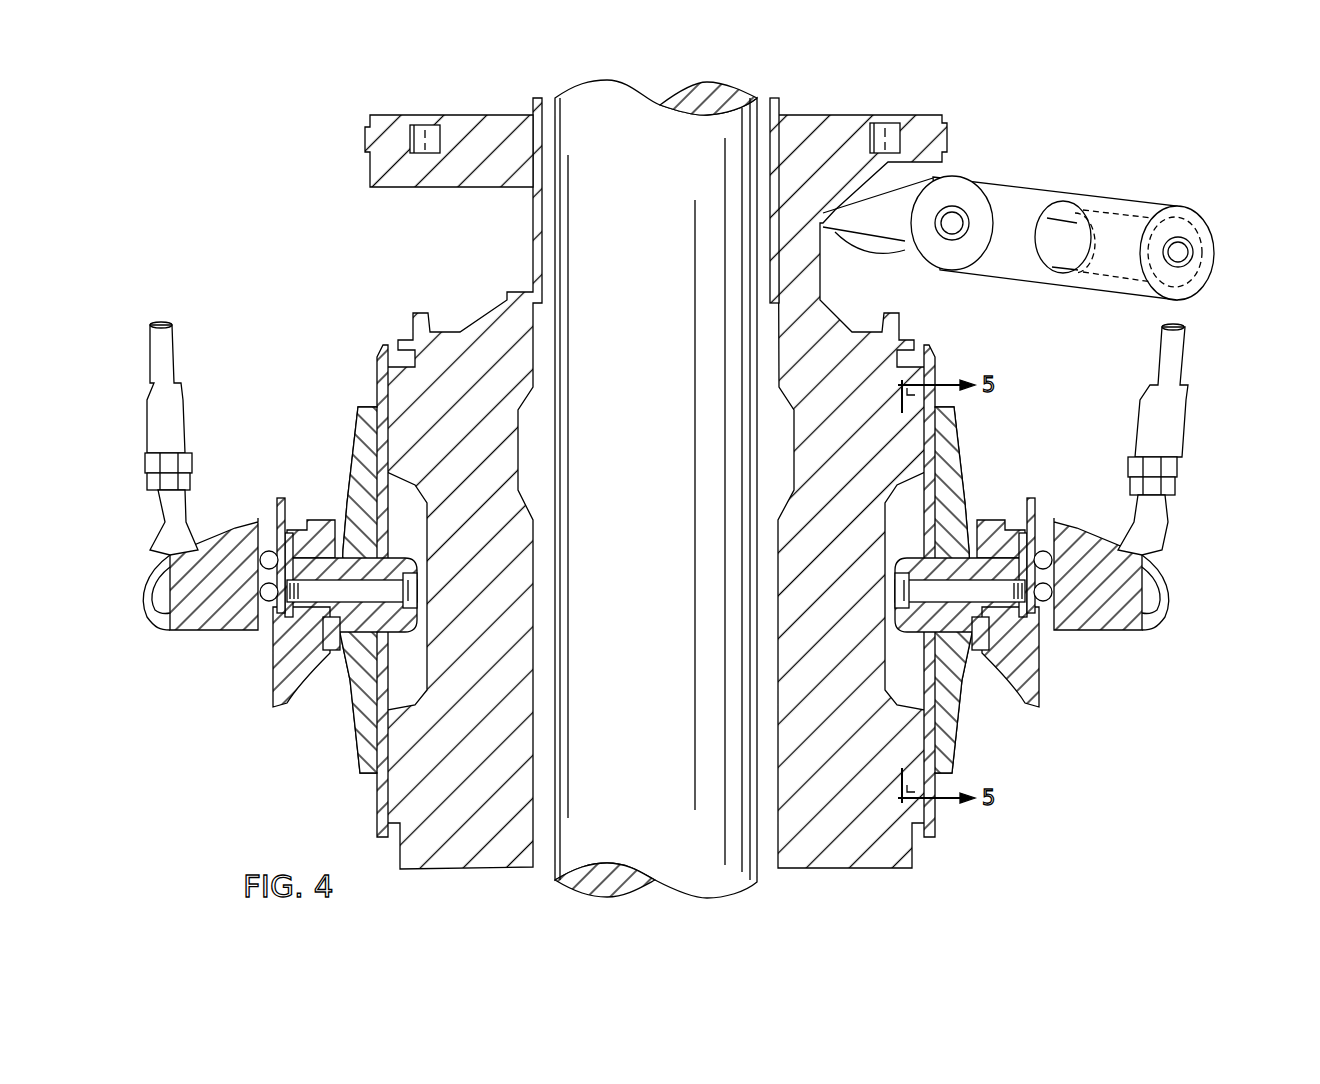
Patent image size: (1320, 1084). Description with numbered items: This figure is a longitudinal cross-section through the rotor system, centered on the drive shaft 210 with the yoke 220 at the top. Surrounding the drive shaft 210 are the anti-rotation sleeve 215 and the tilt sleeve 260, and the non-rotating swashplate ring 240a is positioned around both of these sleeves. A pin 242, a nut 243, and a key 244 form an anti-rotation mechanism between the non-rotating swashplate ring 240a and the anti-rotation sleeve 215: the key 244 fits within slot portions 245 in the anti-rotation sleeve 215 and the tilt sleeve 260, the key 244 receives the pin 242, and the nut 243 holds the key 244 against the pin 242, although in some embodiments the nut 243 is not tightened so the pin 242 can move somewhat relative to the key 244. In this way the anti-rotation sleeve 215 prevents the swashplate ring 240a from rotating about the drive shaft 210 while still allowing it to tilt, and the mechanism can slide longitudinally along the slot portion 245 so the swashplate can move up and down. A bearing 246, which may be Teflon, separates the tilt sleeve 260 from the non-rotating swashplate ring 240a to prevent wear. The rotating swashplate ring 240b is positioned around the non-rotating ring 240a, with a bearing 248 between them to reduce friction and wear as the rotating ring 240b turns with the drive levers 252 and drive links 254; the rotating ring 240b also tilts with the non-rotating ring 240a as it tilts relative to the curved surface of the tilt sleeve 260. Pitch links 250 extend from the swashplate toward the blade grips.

The drive shaft 210 is at (671, 614).
The anti-rotation sleeve 215 is at (497, 606).
The yoke 220 is at (947, 140).
The non-rotating swashplate ring 240a is at (272, 665).
The rotating swashplate ring 240b is at (1090, 547).
The pin 242 is at (937, 553).
The nut 243 is at (893, 597).
The key 244 is at (920, 633).
The slot portion 245 is at (897, 523).
The bearing 246 is at (340, 650).
The bearing 248 is at (1053, 592).
The pitch link 250 is at (1165, 568).
The drive lever 252 is at (1213, 238).
The drive link 254 is at (1133, 213).
The tilt sleeve 260 is at (377, 807).